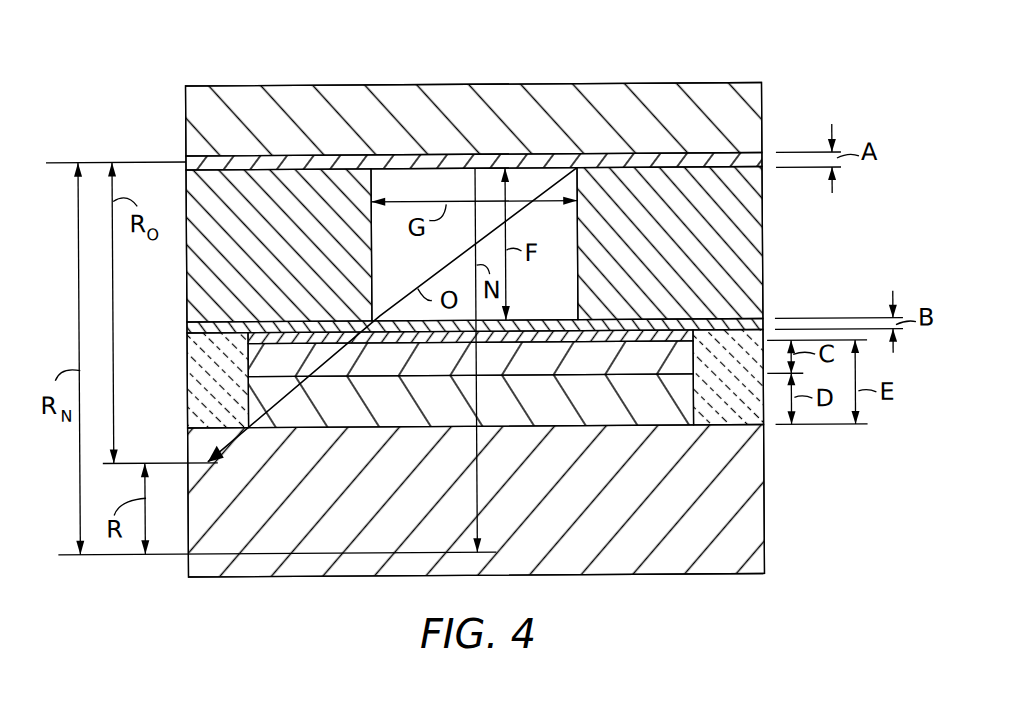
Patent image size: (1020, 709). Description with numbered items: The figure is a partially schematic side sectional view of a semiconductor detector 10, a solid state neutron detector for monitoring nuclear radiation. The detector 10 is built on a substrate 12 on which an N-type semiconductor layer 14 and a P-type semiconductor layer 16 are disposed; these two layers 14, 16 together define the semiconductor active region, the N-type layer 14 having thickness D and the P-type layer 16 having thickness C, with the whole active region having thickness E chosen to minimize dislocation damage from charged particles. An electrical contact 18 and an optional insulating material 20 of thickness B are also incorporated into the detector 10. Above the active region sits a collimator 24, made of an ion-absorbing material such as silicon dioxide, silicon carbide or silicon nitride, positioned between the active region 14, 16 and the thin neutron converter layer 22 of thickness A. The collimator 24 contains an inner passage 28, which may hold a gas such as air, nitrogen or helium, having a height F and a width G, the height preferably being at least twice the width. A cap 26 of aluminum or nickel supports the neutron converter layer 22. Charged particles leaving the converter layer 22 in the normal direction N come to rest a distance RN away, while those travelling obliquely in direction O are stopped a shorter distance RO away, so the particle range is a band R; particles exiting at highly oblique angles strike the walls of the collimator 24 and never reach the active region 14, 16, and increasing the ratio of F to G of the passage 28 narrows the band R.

The semiconductor detector 10 is at (126, 95).
The substrate 12 is at (208, 488).
The N-type semiconductor layer 14 is at (267, 410).
The P-type semiconductor layer 16 is at (265, 370).
The electrical contact 18 is at (237, 334).
The insulating material 20 is at (232, 352).
The neutron converter layer 22 is at (246, 160).
The collimator 24 is at (190, 268).
The cap 26 is at (428, 86).
The inner passage 28 is at (561, 301).